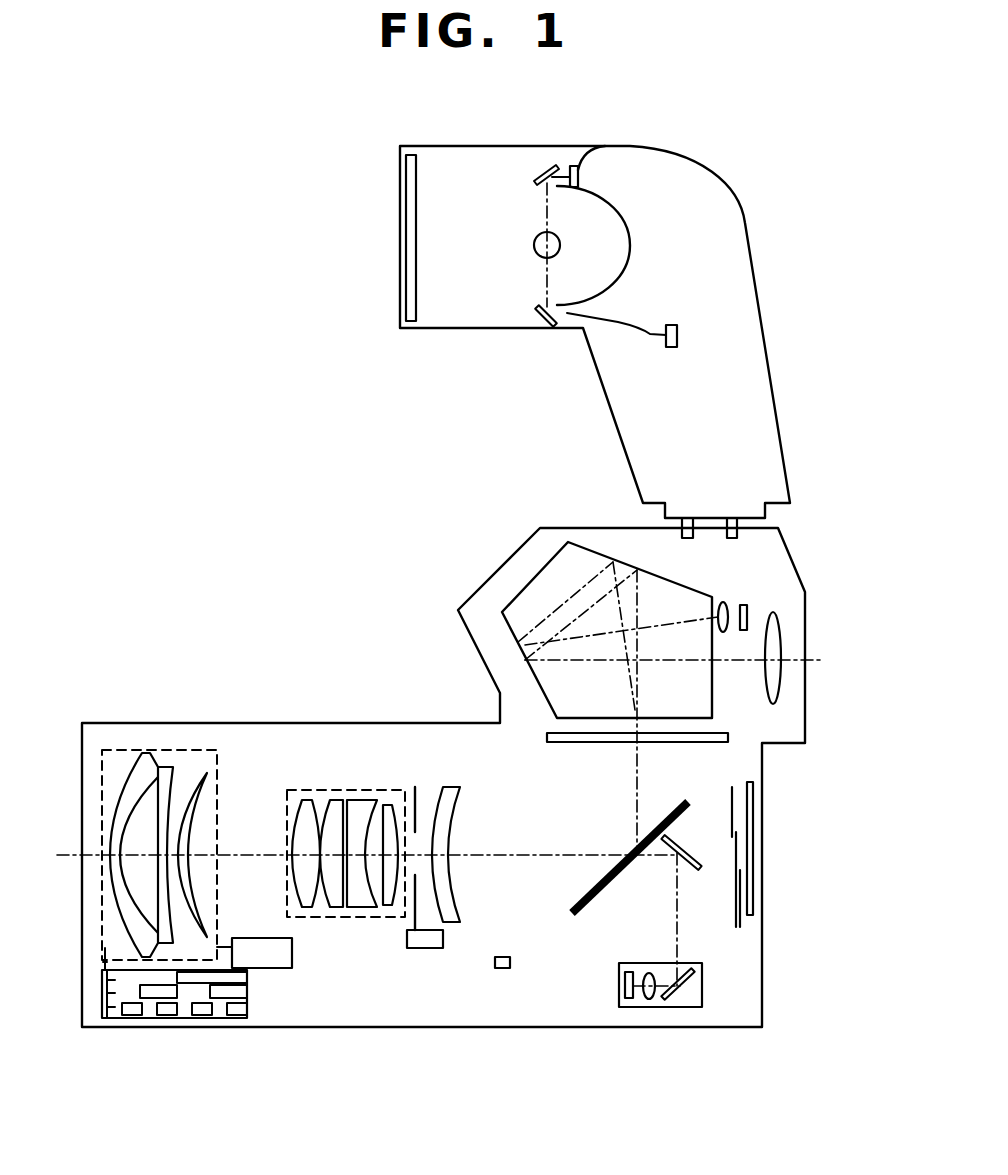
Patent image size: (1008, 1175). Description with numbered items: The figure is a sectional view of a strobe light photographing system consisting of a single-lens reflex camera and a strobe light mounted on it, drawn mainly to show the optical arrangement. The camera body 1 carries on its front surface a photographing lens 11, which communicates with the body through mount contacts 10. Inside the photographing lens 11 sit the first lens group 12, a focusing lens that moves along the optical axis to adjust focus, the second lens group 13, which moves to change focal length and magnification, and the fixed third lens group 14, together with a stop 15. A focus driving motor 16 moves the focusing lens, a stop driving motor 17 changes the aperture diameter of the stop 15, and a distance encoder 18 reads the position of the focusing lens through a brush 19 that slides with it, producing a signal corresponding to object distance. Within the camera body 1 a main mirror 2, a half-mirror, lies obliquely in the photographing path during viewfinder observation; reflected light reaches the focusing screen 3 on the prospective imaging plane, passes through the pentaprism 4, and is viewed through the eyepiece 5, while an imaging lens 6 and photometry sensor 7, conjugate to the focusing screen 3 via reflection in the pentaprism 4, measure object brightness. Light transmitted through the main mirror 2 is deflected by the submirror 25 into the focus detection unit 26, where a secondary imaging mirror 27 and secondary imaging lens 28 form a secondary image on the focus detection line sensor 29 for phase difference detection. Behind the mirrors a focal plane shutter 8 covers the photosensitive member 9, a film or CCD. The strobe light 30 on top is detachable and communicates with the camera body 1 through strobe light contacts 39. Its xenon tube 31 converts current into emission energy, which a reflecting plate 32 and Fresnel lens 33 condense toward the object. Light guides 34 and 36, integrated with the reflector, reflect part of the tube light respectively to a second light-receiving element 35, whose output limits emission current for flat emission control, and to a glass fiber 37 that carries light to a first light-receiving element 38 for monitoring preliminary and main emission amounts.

The camera body 1 is at (458, 610).
The main mirror 2 is at (688, 800).
The focusing screen 3 is at (728, 737).
The pentaprism 4 is at (557, 583).
The eyepiece 5 is at (780, 640).
The imaging lens 6 is at (723, 600).
The photometry sensor 7 is at (747, 610).
The focal plane shutter 8 is at (740, 925).
The photosensitive member 9 is at (753, 893).
The mount contacts 10 is at (510, 965).
The photographing lens 11 is at (130, 750).
The first lens group (focusing lens) 12 is at (210, 750).
The second lens group 13 is at (292, 790).
The third lens group 14 is at (447, 787).
The stop 15 is at (415, 787).
The focus driving motor 16 is at (270, 968).
The stop driving motor 17 is at (423, 948).
The distance encoder 18 is at (152, 1018).
The brush 19 is at (103, 962).
The submirror 25 is at (697, 868).
The focus detection unit 26 is at (702, 990).
The secondary imaging mirror 27 is at (677, 1005).
The secondary imaging lens 28 is at (649, 1000).
The focus detection line sensor 29 is at (630, 1000).
The strobe light 30 is at (747, 233).
The xenon tube 31 is at (533, 252).
The reflecting plate 32 is at (412, 321).
The Fresnel lens 33 is at (622, 215).
The light guide 34 is at (555, 165).
The second light-receiving element 35 is at (580, 165).
The light guide 36 is at (540, 327).
The glass fiber 37 is at (618, 322).
The first light-receiving element 38 is at (677, 336).
The strobe light contacts 39 is at (688, 517).